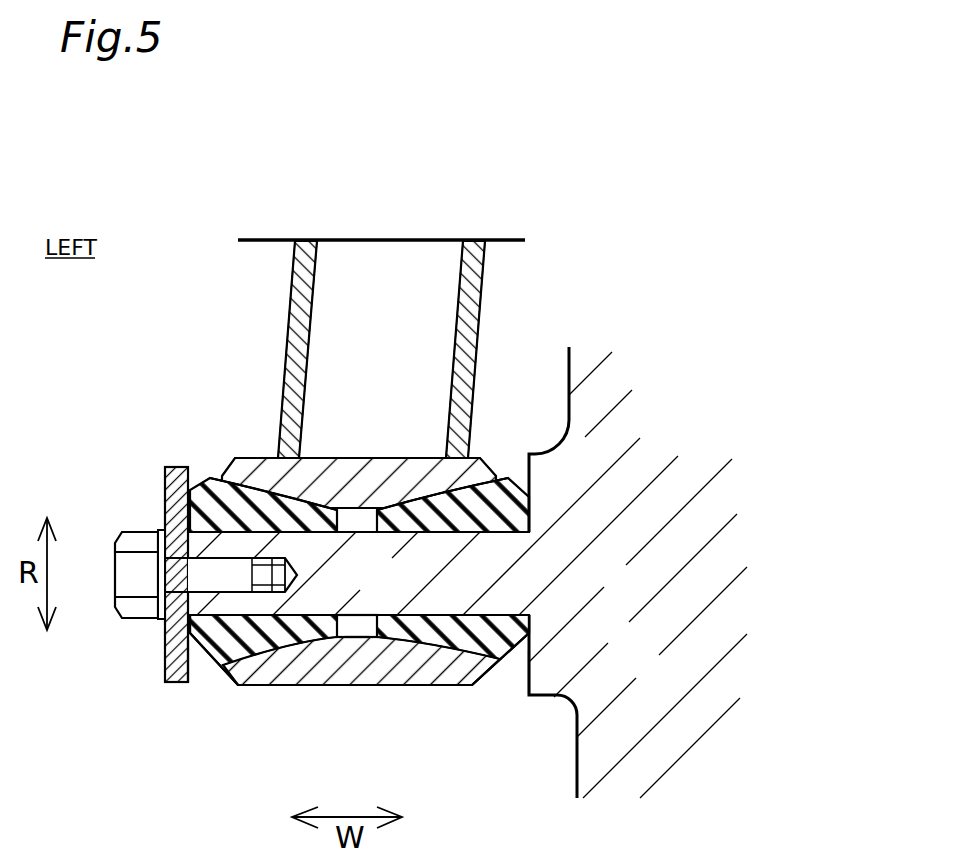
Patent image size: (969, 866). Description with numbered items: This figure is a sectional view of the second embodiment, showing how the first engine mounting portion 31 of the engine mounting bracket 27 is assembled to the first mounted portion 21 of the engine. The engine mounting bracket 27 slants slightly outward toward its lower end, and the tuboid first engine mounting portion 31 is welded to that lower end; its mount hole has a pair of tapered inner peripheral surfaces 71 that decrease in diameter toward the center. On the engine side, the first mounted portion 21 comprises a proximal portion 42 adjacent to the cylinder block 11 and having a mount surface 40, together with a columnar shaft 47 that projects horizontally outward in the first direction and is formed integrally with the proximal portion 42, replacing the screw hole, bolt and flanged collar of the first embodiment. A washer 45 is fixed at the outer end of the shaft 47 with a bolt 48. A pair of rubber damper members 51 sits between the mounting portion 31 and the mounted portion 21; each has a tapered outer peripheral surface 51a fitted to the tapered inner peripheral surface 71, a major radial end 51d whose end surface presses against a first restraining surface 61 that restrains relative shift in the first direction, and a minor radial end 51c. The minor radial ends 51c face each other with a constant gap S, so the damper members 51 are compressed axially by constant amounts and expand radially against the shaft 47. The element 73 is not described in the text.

The first engine mounting bracket 27 is at (305, 282).
The first engine mounting portion 31 is at (366, 450).
The damper member 51 is at (259, 505).
The tapered inner peripheral surface 71 is at (297, 500).
The washer 45 is at (163, 482).
The first mounted portion 21 is at (389, 588).
The mount surface 40 is at (529, 476).
The cylinder block 11 is at (717, 441).
The columnar shaft 47 is at (432, 578).
The minor radial end 51c is at (352, 637).
The bolt 48 is at (206, 573).
The major radial end 51d is at (195, 620).
The proximal portion 42 is at (552, 673).
The first restraining surface 61 is at (188, 662).
The tapered outer peripheral surface 51a is at (250, 660).
The recess 73 is at (354, 638).
The gap S is at (360, 638).